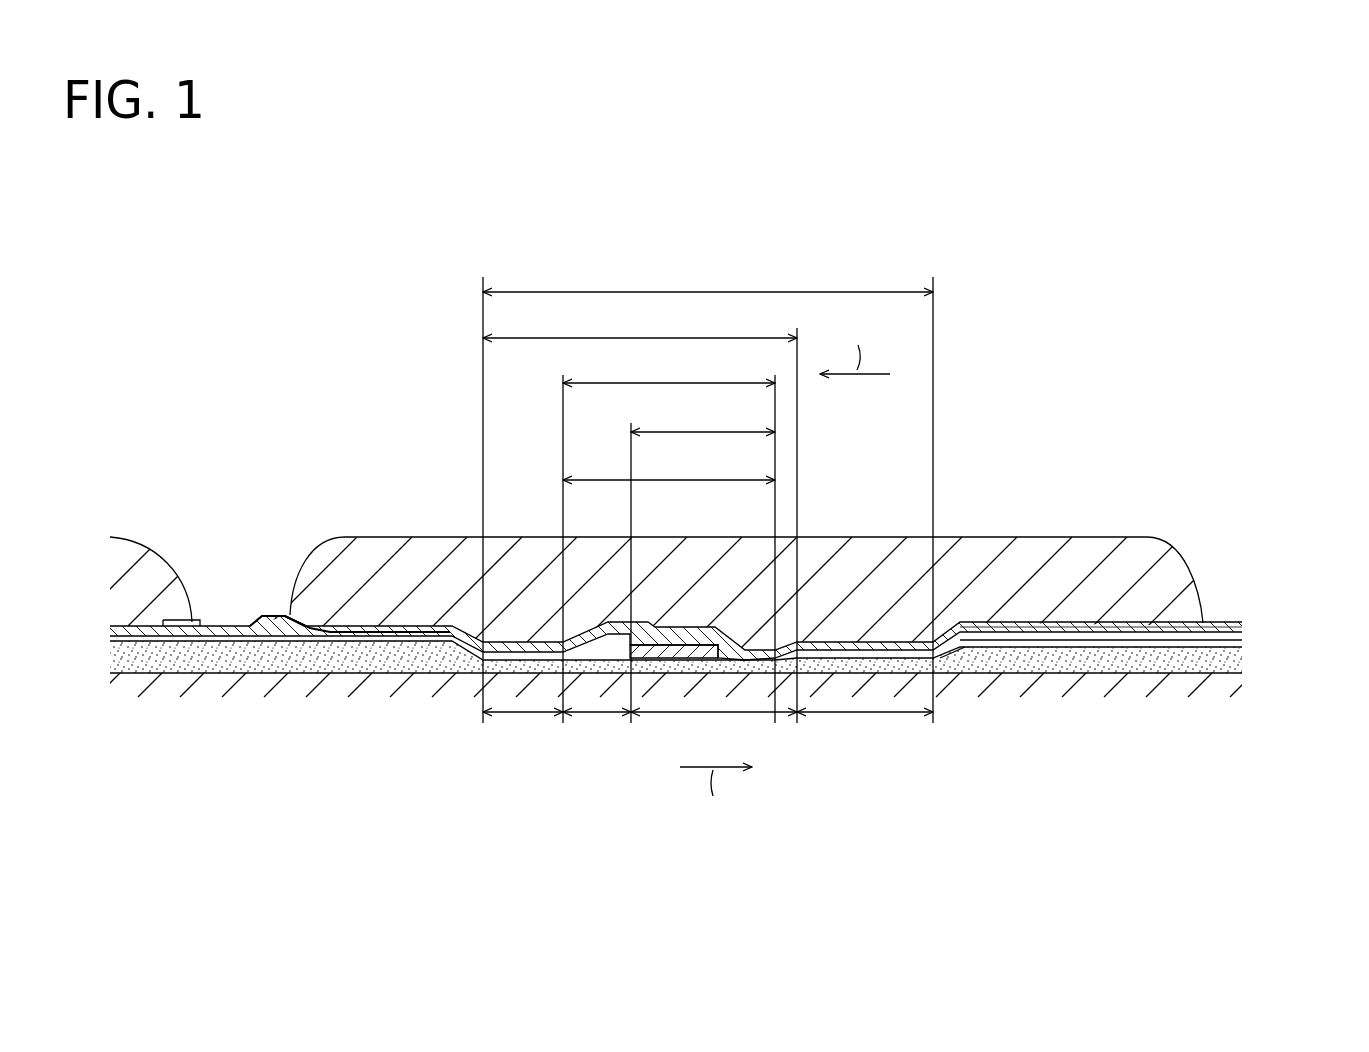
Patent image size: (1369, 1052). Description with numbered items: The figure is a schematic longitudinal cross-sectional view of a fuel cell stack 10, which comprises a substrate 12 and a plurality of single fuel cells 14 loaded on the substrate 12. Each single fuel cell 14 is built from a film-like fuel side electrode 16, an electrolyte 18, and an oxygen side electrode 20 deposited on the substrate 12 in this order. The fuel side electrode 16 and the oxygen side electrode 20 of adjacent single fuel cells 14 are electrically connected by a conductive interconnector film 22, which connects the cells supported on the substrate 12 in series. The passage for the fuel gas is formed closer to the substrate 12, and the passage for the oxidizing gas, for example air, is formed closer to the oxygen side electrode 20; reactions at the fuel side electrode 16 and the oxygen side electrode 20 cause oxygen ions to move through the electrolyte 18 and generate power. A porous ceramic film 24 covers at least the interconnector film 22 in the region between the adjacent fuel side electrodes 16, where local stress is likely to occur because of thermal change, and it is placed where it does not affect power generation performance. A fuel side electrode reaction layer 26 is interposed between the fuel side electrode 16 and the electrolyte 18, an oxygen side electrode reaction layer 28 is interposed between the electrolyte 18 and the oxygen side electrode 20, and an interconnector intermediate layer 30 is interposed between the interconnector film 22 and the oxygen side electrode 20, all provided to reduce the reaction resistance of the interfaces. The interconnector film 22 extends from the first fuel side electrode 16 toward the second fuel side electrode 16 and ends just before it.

The fuel cell stack 10 is at (632, 173).
The substrate 12 is at (447, 733).
The single fuel cell 14 is at (716, 634).
The fuel side electrode 16 is at (1232, 663).
The electrolyte 18 is at (1230, 636).
The oxygen side electrode 20 is at (163, 560).
The interconnector film 22 is at (262, 617).
The porous ceramic film 24 is at (665, 658).
The fuel side electrode reaction layer 26 is at (1243, 644).
The oxygen side electrode reaction layer 28 is at (1218, 627).
The interconnector intermediate layer 30 is at (292, 612).